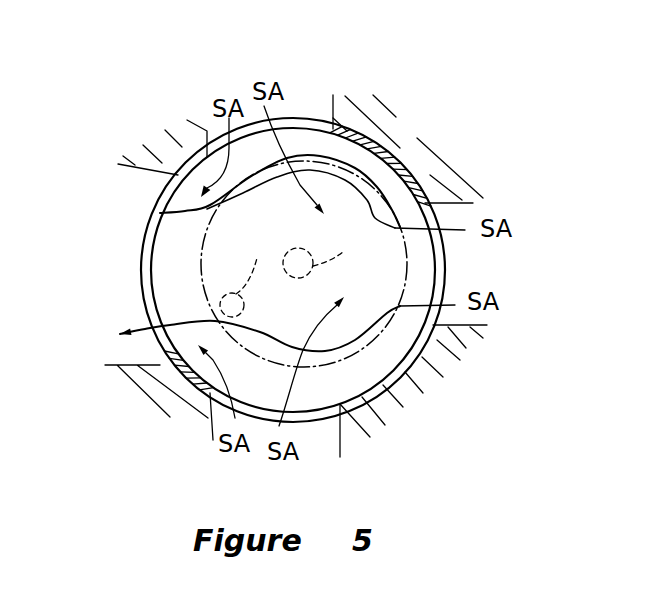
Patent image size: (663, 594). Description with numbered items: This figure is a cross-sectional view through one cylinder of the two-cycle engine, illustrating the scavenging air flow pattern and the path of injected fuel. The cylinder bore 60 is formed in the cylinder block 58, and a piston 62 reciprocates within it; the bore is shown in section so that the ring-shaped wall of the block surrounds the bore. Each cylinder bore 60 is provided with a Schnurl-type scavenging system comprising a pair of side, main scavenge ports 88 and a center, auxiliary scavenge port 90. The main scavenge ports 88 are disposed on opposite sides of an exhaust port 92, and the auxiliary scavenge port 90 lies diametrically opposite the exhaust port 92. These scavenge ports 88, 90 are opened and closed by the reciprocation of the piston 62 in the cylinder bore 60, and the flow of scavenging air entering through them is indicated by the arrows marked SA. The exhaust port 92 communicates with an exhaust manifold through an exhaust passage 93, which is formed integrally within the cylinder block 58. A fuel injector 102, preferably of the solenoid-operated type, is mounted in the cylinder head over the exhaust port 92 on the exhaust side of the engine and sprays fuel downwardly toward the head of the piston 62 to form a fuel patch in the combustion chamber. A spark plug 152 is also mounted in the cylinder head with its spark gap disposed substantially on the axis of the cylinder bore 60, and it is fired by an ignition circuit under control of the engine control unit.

The cylinder block 58 is at (448, 178).
The cylinder bore 60 is at (398, 163).
The piston 62 is at (280, 393).
The main scavenge port 88 is at (310, 120).
The auxiliary scavenge port 90 is at (447, 268).
The exhaust port 92 is at (147, 260).
The exhaust passage 93 is at (108, 293).
The fuel injector 102 is at (242, 274).
The spark plug 152 is at (326, 250).